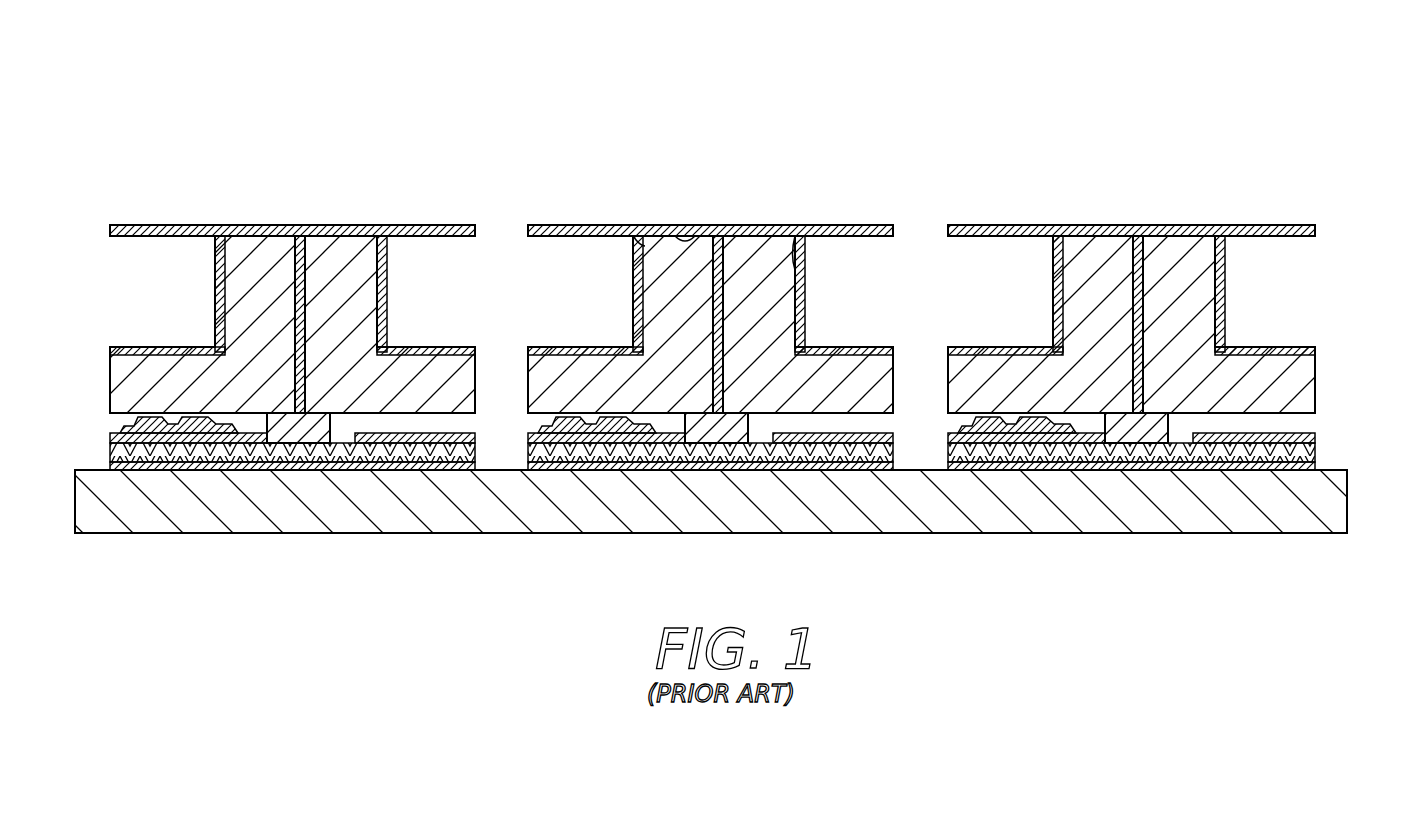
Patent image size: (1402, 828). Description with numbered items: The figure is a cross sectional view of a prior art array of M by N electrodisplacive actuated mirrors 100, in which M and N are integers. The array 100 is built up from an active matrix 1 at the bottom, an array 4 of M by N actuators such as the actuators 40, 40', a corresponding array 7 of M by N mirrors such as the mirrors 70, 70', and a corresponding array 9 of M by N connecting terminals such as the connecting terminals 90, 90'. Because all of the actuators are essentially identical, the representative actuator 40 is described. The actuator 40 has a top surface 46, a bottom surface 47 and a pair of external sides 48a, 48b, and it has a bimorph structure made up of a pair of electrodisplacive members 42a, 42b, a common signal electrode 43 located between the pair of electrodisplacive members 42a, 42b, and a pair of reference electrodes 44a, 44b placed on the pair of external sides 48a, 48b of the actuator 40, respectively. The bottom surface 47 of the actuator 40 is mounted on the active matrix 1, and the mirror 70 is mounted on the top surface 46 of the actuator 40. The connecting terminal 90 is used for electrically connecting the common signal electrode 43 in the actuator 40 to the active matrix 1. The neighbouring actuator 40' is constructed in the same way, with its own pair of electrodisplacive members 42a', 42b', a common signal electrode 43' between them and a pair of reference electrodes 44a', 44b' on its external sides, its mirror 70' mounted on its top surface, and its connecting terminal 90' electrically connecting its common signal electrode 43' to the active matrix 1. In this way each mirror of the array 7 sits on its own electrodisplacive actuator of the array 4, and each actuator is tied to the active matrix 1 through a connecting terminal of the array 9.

The array of M×N electrodisplacive actuated mirrors 100 is at (1288, 89).
The active matrix 1 is at (1355, 535).
The array of M×N connecting terminals 9 is at (1325, 417).
The array of M×N mirrors 7 is at (1325, 216).
The array of M×N actuators 4 is at (1325, 247).
The actuator 40 is at (711, 140).
The actuator 40' is at (1132, 140).
The mirror 70 is at (710, 211).
The mirror 70' is at (1132, 211).
The electrodisplacive member 42a is at (620, 324).
The electrodisplacive member 42a' is at (1040, 324).
The electrodisplacive member 42b is at (808, 324).
The electrodisplacive member 42b' is at (1229, 324).
The reference electrode 44a is at (585, 295).
The reference electrode 44a' is at (1005, 295).
The reference electrode 44b is at (844, 295).
The reference electrode 44b' is at (1265, 295).
The common signal electrode 43 is at (790, 324).
The common signal electrode 43' is at (1213, 324).
The connecting terminal 90 is at (736, 428).
The connecting terminal 90' is at (1159, 428).
The external side 48a is at (645, 247).
The top surface 46 is at (685, 240).
The external side 48b is at (796, 270).
The bottom surface 47 is at (540, 407).